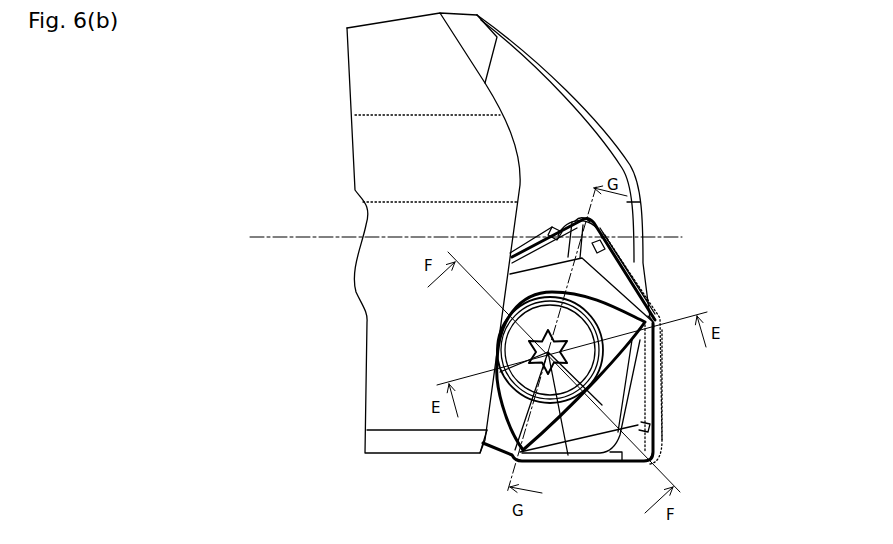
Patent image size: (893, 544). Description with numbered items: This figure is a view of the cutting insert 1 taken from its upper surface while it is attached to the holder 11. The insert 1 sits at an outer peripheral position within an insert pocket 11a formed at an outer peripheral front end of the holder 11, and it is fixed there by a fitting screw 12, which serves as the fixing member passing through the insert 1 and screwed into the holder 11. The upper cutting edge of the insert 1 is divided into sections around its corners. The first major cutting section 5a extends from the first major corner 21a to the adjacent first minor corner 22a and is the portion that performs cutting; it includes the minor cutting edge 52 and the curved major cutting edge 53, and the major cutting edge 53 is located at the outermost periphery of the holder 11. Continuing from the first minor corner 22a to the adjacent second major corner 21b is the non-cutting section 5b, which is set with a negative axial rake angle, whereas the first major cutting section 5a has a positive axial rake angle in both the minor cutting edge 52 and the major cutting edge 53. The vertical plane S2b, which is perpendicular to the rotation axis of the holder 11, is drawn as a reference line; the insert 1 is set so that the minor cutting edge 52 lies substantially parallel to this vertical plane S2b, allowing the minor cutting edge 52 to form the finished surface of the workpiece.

The holder 11 is at (372, 62).
The insert pocket 11a is at (557, 143).
The vertical plane S2b is at (447, 238).
The insert 1 is at (488, 338).
The fitting screw 12 is at (480, 447).
The second major corner 21b is at (590, 214).
The non-cutting section 5b is at (647, 270).
The first minor corner 22a is at (655, 322).
The major cutting edge 53 is at (660, 385).
The first major cutting section 5a is at (665, 422).
The first major corner 21a is at (658, 455).
The minor cutting edge 52 is at (632, 463).